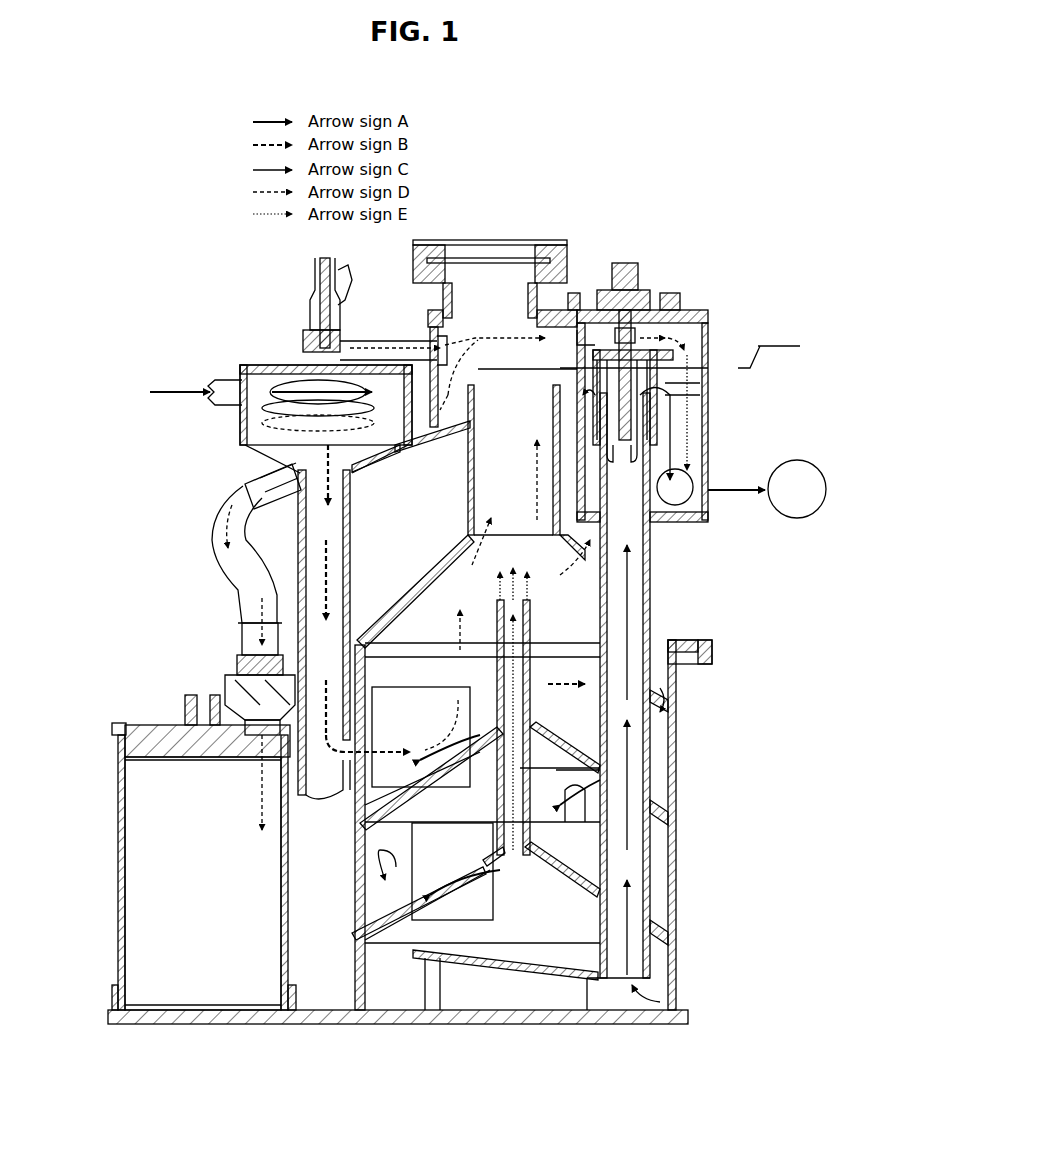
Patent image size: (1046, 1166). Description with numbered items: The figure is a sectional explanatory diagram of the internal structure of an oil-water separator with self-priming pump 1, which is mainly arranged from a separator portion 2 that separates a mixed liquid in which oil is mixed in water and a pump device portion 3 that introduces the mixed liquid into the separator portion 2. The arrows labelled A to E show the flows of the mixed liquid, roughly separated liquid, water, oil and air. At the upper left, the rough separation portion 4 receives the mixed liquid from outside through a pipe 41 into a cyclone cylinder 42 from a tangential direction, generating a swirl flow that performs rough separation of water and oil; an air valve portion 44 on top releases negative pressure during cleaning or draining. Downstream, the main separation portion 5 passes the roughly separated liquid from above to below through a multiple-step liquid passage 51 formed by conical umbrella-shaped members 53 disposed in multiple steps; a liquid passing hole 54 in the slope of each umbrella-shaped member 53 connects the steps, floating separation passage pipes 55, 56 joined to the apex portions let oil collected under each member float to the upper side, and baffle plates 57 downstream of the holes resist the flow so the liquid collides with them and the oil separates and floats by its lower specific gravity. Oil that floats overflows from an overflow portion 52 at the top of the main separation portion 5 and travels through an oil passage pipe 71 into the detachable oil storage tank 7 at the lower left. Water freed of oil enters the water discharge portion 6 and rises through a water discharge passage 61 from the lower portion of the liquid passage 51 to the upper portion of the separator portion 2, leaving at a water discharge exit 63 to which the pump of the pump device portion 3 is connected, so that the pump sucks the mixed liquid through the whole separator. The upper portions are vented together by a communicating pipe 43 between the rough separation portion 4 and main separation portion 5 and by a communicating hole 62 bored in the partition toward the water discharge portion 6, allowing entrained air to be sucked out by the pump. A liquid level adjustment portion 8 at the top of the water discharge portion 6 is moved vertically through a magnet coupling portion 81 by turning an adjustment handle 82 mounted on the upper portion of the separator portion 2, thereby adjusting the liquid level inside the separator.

The oil-water separator with self-priming pump 1 is at (138, 275).
The separator portion 2 is at (550, 430).
The pump device portion 3 is at (803, 462).
The rough separation portion 4 is at (347, 381).
The pipe 41 is at (224, 384).
The cyclone cylinder 42 is at (256, 428).
The communicating pipe 43 is at (388, 343).
The air valve portion 44 is at (316, 298).
The main separation portion 5 is at (428, 547).
The multiple-step liquid passage 51 is at (570, 728).
The overflow portion 52 is at (487, 395).
The umbrella-shaped member 53 is at (568, 752).
The liquid passing hole 54 is at (397, 805).
The floating separation passage pipe 55 is at (526, 769).
The floating separation passage pipe 56 is at (503, 605).
The baffle plate 57 is at (413, 685).
The water discharge portion 6 is at (680, 381).
The water discharge passage 61 is at (628, 778).
The communicating hole 62 is at (578, 345).
The water discharge exit 63 is at (690, 498).
The oil storage tank 7 is at (128, 836).
The oil passage pipe 71 is at (215, 528).
The liquid level adjustment portion 8 is at (665, 365).
The magnet coupling portion 81 is at (652, 305).
The adjustment handle 82 is at (625, 276).